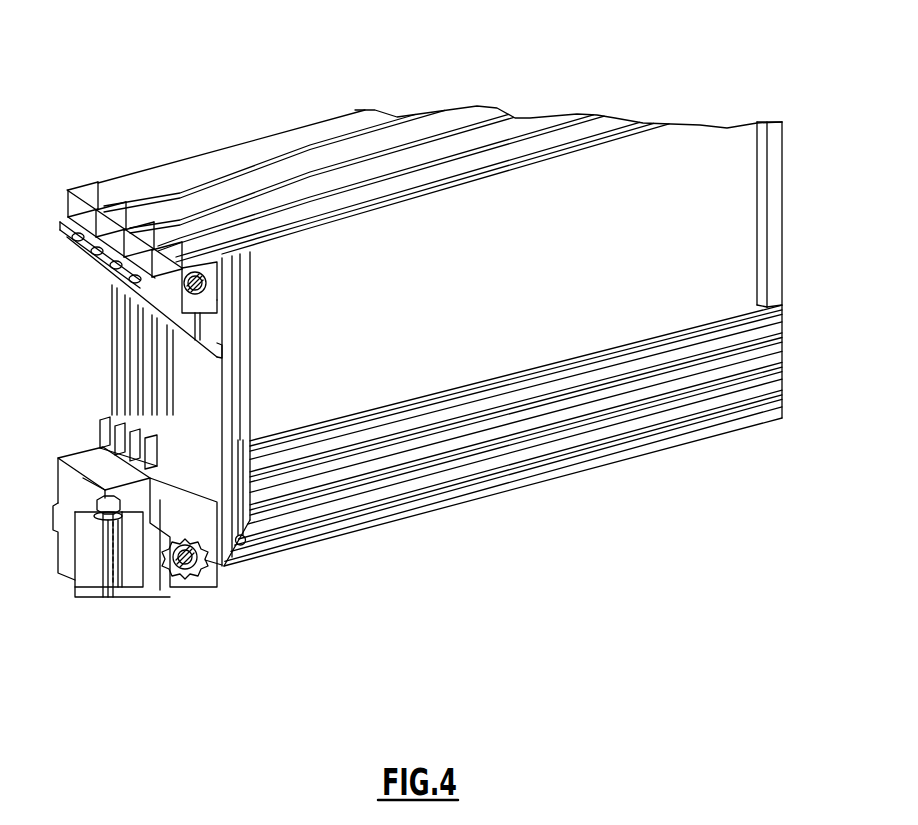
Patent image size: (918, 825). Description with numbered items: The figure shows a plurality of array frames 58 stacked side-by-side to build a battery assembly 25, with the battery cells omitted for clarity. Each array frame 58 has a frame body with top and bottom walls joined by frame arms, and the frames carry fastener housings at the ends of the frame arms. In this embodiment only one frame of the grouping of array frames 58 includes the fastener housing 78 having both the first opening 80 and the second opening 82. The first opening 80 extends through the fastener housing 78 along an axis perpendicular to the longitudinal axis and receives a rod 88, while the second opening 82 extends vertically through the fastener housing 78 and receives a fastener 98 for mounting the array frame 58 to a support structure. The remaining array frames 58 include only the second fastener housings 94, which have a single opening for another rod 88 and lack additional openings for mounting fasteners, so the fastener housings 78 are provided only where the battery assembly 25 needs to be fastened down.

The battery assembly 25 is at (448, 80).
The array frame 58 is at (343, 204).
The fastener housing 78 is at (84, 580).
The first opening 80 is at (207, 547).
The second opening 82 is at (118, 548).
The rod 88 is at (208, 285).
The second fastener housing 94 is at (110, 274).
The fastener 98 is at (97, 508).